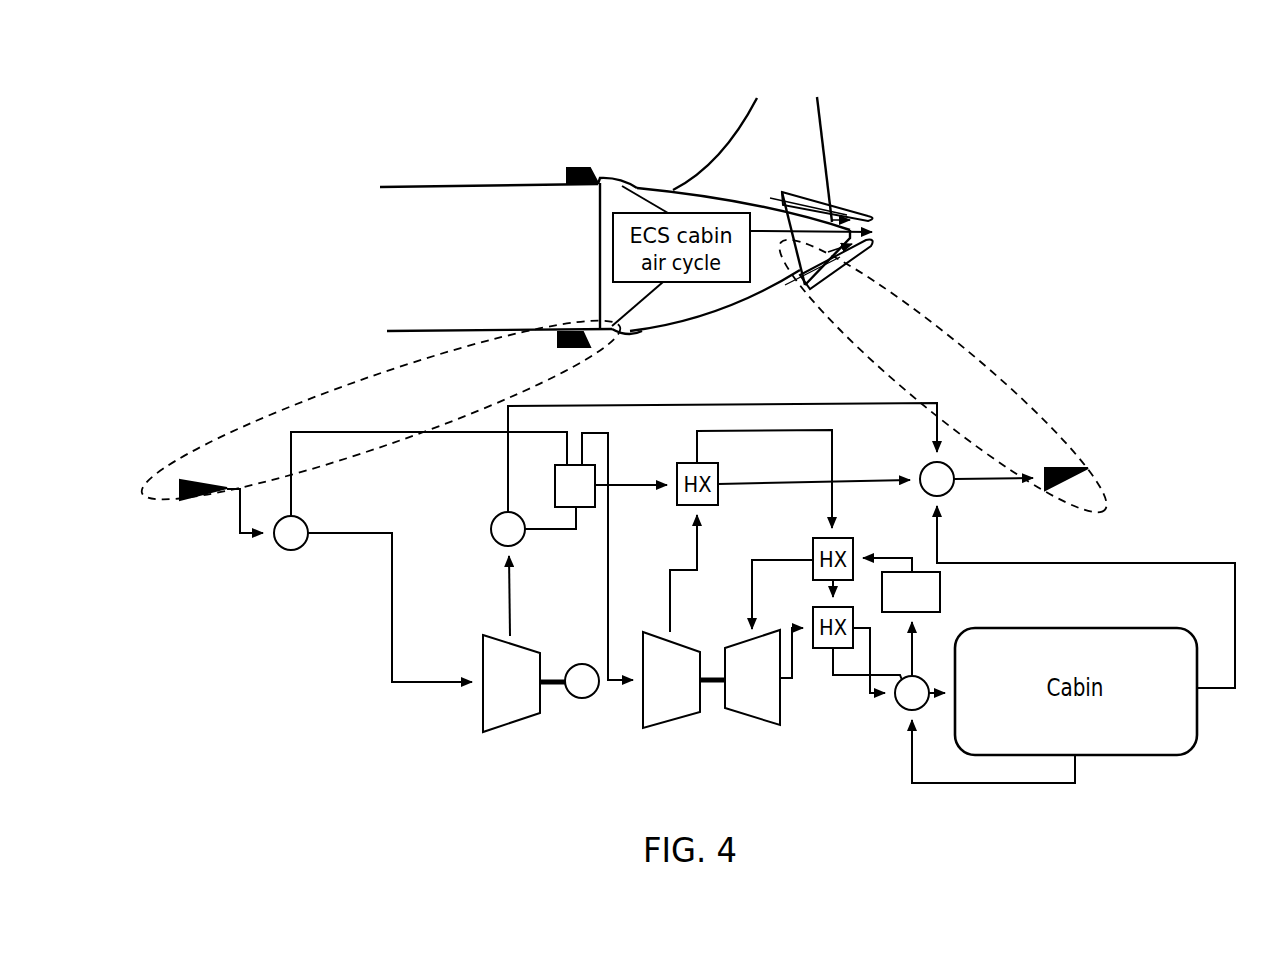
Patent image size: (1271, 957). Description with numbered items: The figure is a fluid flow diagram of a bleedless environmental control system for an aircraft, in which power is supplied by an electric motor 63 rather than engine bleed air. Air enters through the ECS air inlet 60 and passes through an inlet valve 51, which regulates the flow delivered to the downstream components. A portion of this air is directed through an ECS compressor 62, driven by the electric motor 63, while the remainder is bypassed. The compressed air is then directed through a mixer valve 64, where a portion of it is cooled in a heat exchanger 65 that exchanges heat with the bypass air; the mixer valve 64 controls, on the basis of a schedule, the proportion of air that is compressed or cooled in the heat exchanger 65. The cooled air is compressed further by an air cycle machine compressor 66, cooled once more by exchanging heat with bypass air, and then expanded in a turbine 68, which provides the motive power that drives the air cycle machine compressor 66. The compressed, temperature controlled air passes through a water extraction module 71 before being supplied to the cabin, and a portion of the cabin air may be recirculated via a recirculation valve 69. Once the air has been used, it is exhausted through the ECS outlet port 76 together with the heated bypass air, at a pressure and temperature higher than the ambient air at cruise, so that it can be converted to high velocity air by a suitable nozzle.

The inlet valve 51 is at (303, 522).
The ECS air inlet 60 is at (228, 488).
The ECS compressor 62 is at (513, 723).
The electric motor 63 is at (586, 698).
The mixer valve 64 is at (492, 527).
The heat exchanger 65 is at (597, 473).
The air cycle machine compressor 66 is at (238, 513).
The turbine 68 is at (784, 703).
The recirculation valve 69 is at (928, 708).
The water extraction module 71 is at (940, 573).
The ECS outlet port 76 is at (988, 478).